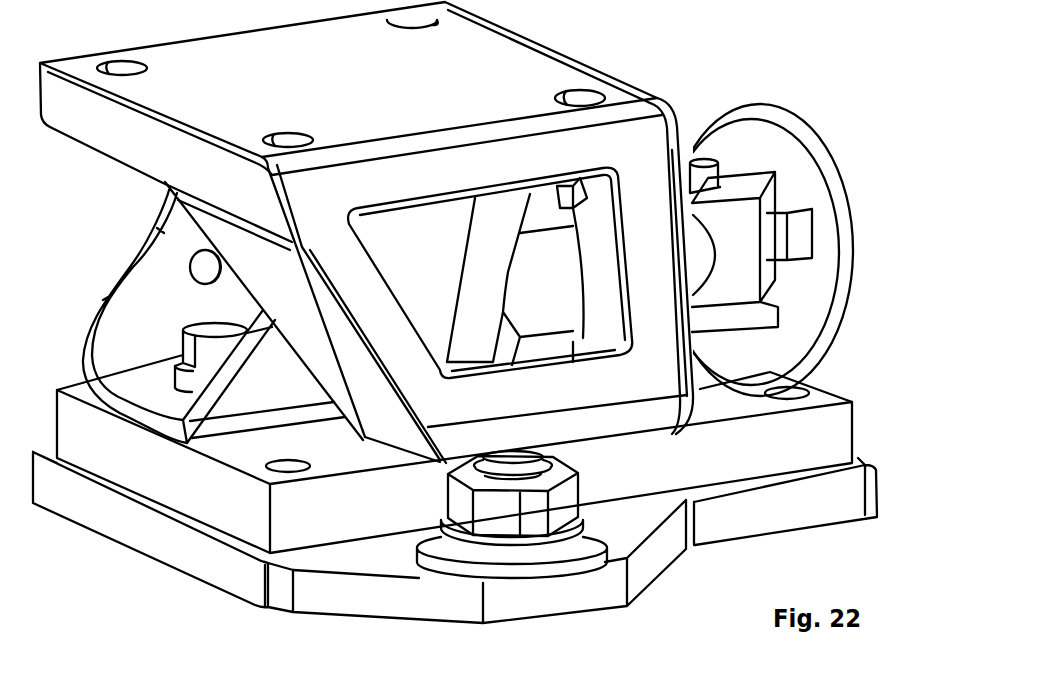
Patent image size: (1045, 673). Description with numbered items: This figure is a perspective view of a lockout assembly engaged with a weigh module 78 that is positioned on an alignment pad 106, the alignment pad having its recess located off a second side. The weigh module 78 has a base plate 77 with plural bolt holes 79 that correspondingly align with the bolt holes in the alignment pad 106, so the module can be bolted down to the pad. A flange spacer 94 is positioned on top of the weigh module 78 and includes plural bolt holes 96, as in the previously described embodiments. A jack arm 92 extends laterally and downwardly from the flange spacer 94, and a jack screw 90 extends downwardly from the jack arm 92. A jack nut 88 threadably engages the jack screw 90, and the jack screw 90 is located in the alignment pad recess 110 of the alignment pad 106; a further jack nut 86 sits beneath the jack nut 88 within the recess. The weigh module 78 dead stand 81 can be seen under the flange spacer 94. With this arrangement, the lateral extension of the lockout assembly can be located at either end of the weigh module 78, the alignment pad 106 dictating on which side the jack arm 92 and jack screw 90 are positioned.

The base plate 77 is at (856, 423).
The weigh module 78 is at (740, 183).
The bolt holes 79 is at (287, 462).
The dead stand 81 is at (130, 272).
The jack nut 86 is at (418, 533).
The jack nut 88 is at (447, 489).
The jack screw 90 is at (545, 453).
The jack arm 92 is at (392, 297).
The flange spacer 94 is at (361, 89).
The bolt holes 96 is at (135, 75).
The alignment pad 106 is at (877, 494).
The alignment pad recess 110 is at (609, 548).